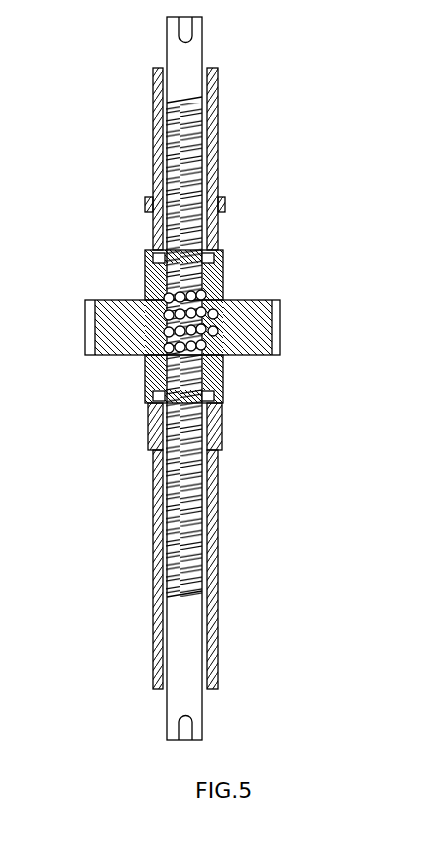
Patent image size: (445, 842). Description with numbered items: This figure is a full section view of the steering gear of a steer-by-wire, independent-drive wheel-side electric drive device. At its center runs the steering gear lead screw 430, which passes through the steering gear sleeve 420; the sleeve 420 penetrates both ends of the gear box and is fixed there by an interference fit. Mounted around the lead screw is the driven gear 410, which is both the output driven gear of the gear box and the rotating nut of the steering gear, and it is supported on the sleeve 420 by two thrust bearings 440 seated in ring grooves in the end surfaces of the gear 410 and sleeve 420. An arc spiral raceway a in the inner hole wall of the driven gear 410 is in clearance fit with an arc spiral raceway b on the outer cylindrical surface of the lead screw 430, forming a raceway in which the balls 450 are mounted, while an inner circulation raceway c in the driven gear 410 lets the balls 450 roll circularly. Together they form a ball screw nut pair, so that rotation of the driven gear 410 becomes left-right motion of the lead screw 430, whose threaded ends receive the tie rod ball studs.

The driven gear 410 is at (259, 328).
The steering gear sleeve 420 is at (216, 152).
The steering gear lead screw 430 is at (187, 62).
The thrust bearings 440 is at (221, 257).
The balls 450 is at (220, 342).
The arc spiral raceway a is at (198, 270).
The arc spiral raceway b is at (166, 283).
The inner circulation raceway c is at (148, 297).